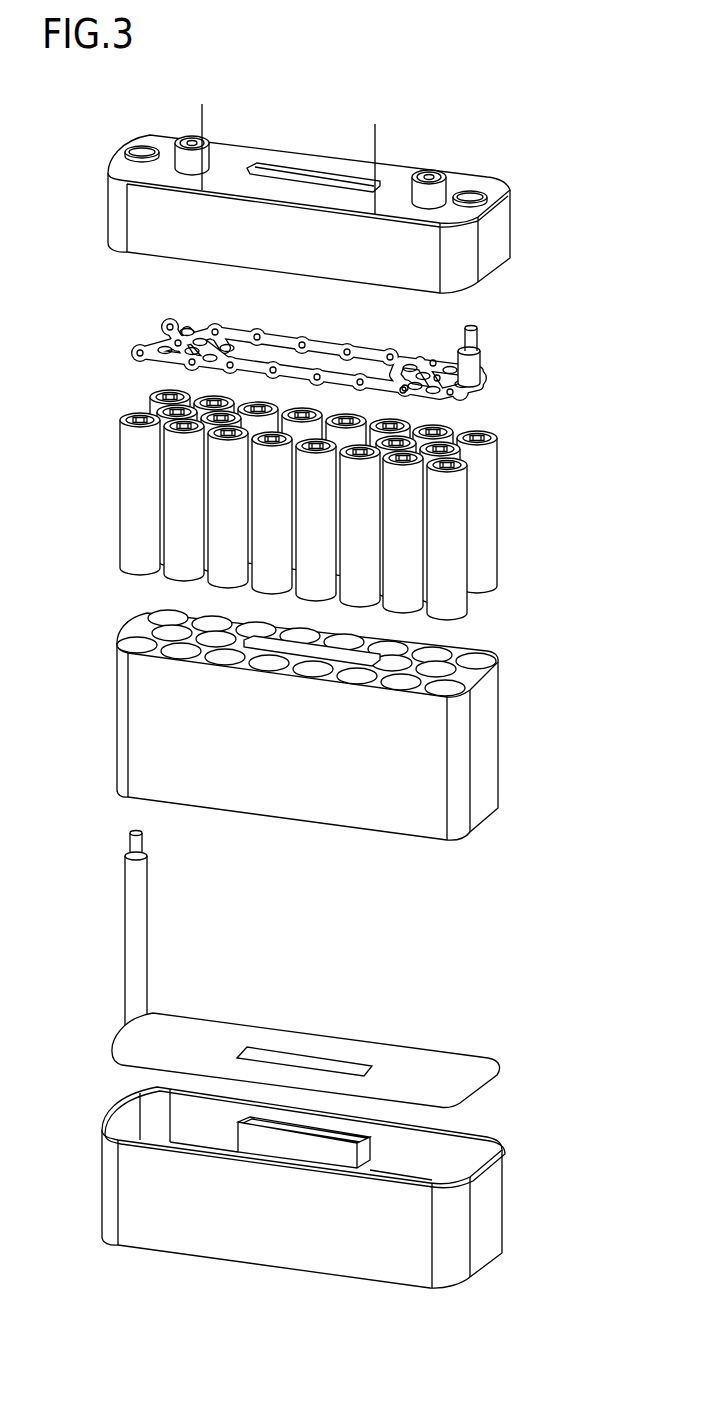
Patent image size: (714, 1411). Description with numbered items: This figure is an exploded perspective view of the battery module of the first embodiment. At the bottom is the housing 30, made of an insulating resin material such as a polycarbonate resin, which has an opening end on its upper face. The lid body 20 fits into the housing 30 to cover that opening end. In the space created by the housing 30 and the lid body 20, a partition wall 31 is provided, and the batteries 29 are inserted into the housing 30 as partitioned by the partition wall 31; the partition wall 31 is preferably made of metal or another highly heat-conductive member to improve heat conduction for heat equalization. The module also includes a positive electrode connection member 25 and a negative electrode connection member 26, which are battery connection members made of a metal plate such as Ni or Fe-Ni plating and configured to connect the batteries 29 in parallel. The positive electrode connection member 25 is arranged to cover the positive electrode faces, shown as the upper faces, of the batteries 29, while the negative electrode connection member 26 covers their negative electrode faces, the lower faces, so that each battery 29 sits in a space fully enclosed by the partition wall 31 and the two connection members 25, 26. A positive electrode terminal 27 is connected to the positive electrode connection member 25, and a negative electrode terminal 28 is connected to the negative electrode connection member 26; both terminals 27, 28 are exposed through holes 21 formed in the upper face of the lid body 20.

The lid body 20 is at (517, 225).
The holes 21 is at (483, 190).
The positive electrode connection member 25 is at (467, 392).
The negative electrode connection member 26 is at (448, 1060).
The positive electrode terminal 27 is at (482, 337).
The negative electrode terminal 28 is at (120, 947).
The batteries 29 is at (505, 502).
The housing 30 is at (508, 1202).
The partition wall 31 is at (503, 732).